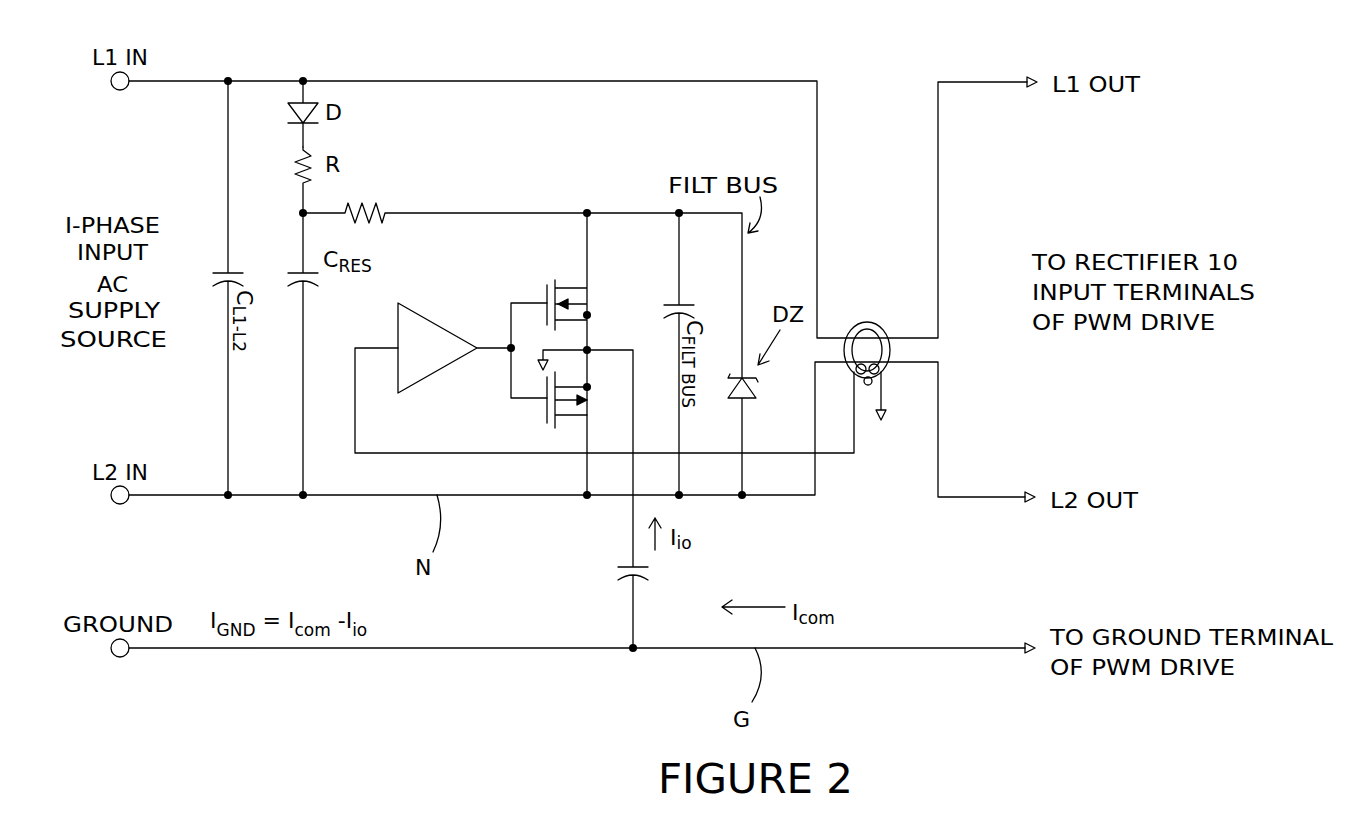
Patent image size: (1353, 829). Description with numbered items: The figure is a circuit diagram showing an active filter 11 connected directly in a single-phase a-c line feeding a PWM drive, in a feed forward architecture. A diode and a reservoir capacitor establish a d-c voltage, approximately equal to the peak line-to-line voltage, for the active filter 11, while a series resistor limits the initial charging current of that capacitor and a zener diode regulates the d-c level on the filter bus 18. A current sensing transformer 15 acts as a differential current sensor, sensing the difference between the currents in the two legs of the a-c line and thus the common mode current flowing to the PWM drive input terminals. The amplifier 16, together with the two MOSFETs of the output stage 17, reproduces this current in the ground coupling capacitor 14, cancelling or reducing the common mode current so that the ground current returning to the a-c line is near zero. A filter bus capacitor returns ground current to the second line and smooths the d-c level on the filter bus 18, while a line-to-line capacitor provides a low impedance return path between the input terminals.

The active filter 11 is at (623, 188).
The ground coupling capacitor 14 is at (613, 575).
The current sensing transformer 15 is at (888, 365).
The amplifier 16 is at (428, 325).
The complementary transistor output stage 17 is at (496, 397).
The filter bus 18 is at (462, 213).